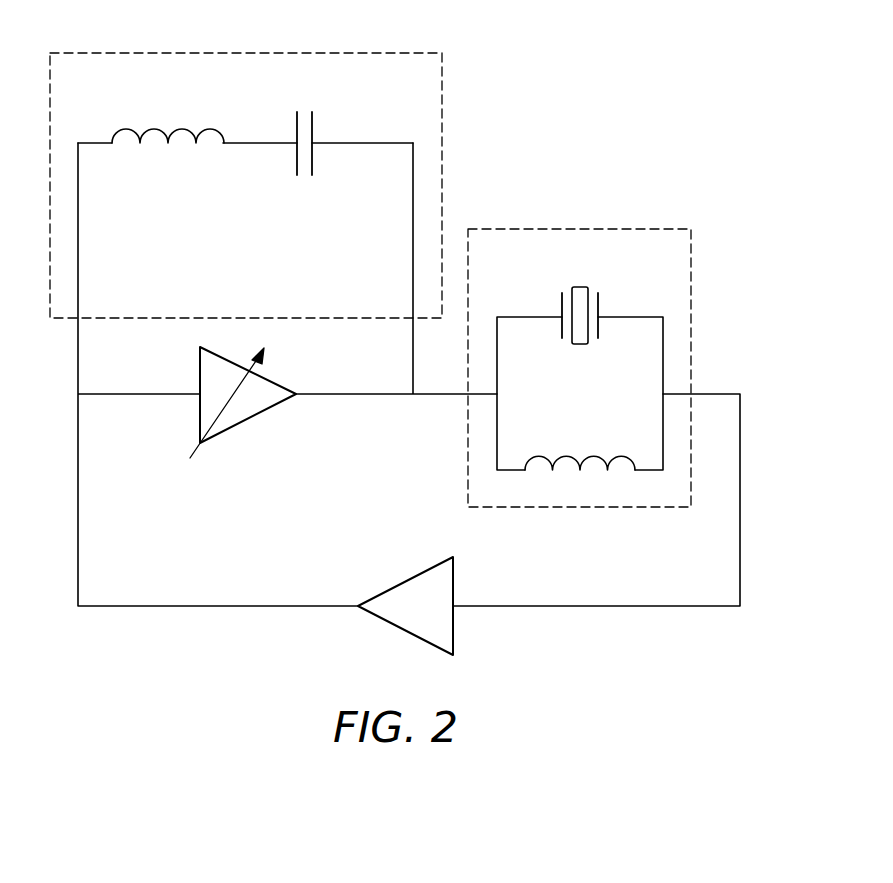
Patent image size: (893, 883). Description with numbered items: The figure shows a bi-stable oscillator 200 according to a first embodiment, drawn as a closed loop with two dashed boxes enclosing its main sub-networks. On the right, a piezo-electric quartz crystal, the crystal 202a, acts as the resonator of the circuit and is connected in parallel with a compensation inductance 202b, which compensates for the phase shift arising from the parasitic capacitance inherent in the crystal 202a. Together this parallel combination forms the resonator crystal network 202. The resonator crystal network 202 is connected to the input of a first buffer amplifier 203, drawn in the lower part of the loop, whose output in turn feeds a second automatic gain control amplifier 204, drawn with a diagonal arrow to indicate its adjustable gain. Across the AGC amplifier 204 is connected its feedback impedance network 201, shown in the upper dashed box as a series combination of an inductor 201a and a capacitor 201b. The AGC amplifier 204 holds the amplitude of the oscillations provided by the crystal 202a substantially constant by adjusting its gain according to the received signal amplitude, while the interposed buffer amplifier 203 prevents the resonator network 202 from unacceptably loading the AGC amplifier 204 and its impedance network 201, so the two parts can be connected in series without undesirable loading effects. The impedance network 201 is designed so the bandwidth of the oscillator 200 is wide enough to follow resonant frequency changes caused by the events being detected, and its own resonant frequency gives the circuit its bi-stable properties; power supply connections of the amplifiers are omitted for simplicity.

The oscillator 200 is at (653, 124).
The feedback impedance network 201 is at (443, 52).
The inductor 201a is at (168, 148).
The capacitor 201b is at (316, 150).
The resonator crystal network 202 is at (711, 330).
The crystal 202a is at (692, 228).
The compensation inductance 202b is at (628, 456).
The buffer amplifier 203 is at (405, 581).
The automatic gain control amplifier 204 is at (255, 420).